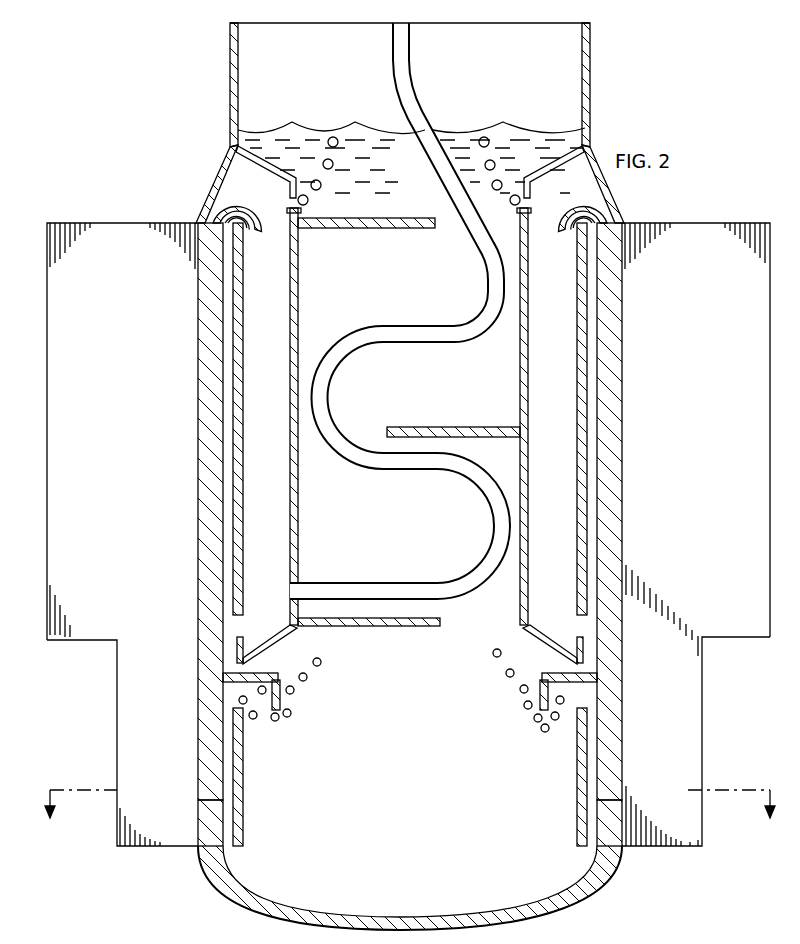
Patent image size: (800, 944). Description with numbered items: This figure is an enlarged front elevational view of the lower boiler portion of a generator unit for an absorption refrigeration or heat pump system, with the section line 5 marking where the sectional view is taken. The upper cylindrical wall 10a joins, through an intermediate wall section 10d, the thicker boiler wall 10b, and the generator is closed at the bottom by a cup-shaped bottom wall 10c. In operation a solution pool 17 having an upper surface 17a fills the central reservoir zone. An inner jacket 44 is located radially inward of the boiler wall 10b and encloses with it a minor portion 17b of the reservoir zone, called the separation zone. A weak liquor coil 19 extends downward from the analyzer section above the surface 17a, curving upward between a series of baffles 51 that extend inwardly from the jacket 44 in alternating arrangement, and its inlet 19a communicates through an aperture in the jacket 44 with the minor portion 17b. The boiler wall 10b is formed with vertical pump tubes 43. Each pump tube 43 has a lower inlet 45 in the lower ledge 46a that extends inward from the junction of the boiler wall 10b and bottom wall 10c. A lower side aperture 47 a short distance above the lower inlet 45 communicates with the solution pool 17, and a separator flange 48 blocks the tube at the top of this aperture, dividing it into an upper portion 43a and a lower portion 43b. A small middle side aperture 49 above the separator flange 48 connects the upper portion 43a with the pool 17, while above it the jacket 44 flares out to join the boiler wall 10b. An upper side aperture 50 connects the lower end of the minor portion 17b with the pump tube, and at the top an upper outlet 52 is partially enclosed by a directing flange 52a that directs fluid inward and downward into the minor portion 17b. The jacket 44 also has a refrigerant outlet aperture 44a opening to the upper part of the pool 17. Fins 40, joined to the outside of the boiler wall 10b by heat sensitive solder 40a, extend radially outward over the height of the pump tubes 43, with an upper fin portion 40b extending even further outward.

The section line 5- 5 is at (408, 817).
The upper cylindrical wall 10a is at (233, 96).
The boiler wall 10b is at (205, 826).
The bottom wall 10c is at (400, 915).
The intermediate wall section 10d is at (222, 178).
The solution pool 17 is at (409, 416).
The upper surface 17a is at (316, 128).
The minor portion of the reservoir zone 17b is at (262, 530).
The weak liquor coil 19 is at (410, 48).
The inlet 19a is at (307, 588).
The fin 40 is at (408, 504).
The heat sensitive solder 40a is at (207, 575).
The upper fin portion 40b is at (75, 632).
The pump tube 43 is at (598, 585).
The upper portion of pump tube 43a is at (233, 456).
The lower portion of pump tube 43b is at (235, 762).
The jacket 44 is at (280, 402).
The refrigerant outlet aperture 44a is at (297, 200).
The lower inlet 45 is at (240, 848).
The lower ledge 46a is at (218, 866).
The lower side aperture 47 is at (401, 696).
The separator flange 48 is at (274, 690).
The middle side aperture 49 is at (240, 668).
The upper side aperture 50 is at (238, 628).
The baffle 51 is at (405, 229).
The upper outlet 52 is at (410, 235).
The directing flange 52a is at (228, 212).